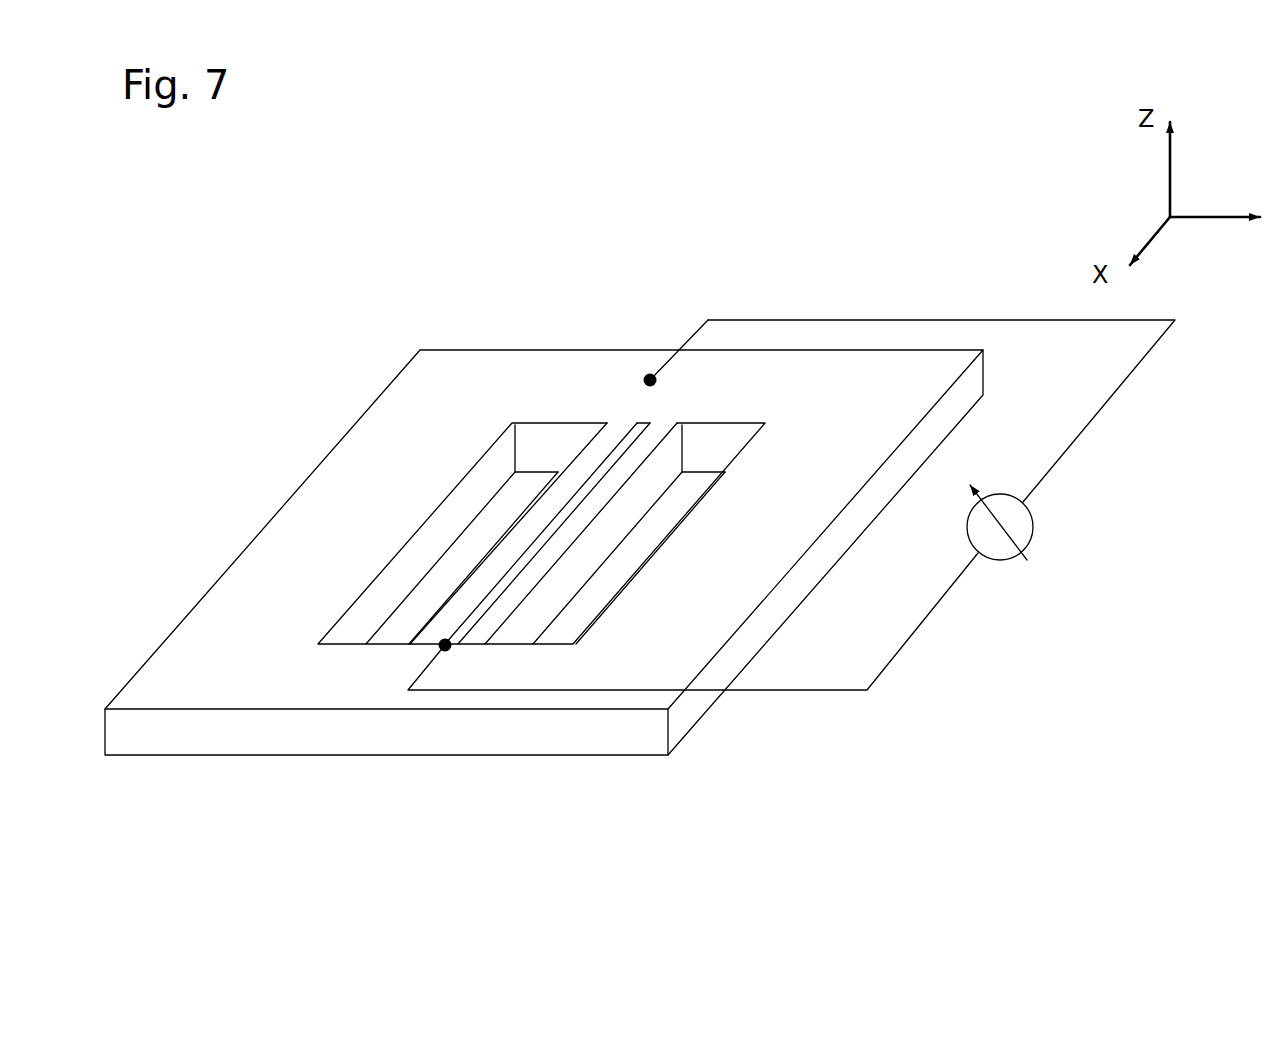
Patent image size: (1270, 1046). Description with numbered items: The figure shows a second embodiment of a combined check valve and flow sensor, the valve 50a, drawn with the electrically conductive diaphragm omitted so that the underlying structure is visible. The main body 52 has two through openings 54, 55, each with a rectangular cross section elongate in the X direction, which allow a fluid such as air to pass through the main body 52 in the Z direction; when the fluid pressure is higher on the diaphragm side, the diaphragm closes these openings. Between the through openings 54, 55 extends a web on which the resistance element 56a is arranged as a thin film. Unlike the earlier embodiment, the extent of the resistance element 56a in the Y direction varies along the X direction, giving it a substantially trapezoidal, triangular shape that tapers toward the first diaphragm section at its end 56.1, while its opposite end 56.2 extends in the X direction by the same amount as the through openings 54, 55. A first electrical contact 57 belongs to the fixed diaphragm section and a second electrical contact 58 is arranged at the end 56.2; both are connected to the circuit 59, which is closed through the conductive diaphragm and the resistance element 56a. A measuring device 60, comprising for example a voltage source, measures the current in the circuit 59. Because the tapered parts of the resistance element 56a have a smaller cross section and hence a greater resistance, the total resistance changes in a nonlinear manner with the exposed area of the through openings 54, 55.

The valve 50a is at (563, 217).
The main body 52 is at (223, 681).
The through opening 54 is at (367, 627).
The through opening 55 is at (527, 627).
The end of the resistance element 56.1 is at (658, 416).
The end of the resistance element 56.2 is at (415, 655).
The resistance element 56a is at (503, 612).
The first electrical contact 57 is at (650, 375).
The second electrical contact 58 is at (442, 641).
The circuit 59 is at (868, 690).
The measuring device 60 is at (1050, 510).